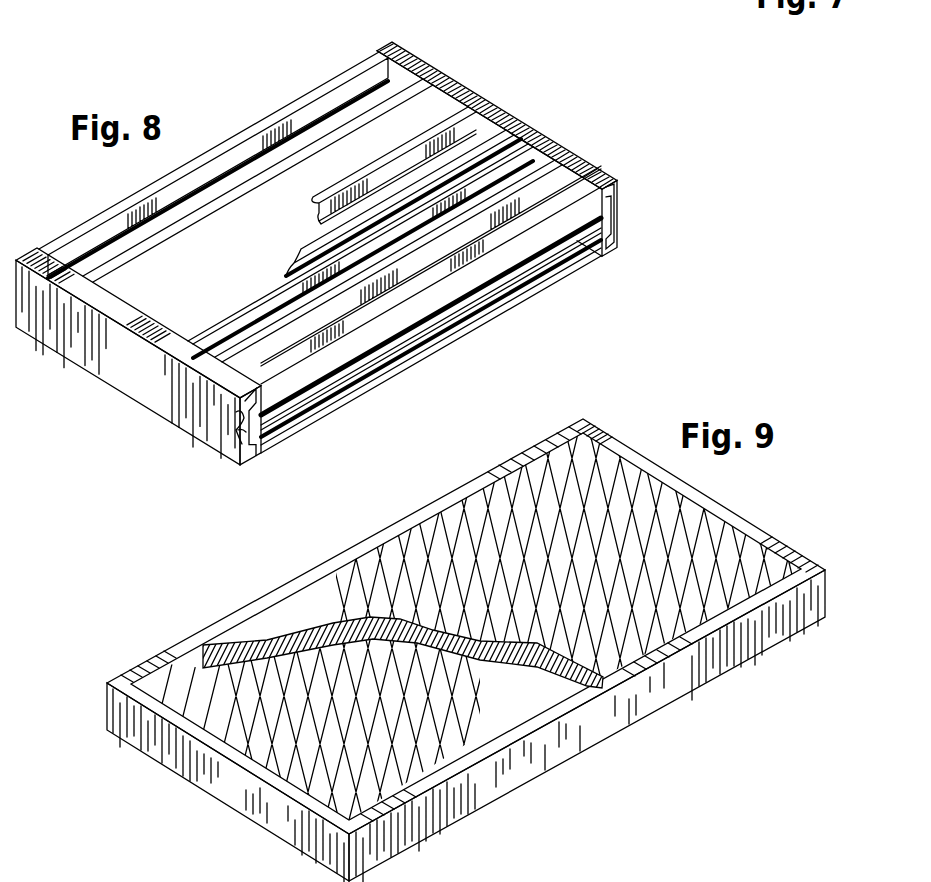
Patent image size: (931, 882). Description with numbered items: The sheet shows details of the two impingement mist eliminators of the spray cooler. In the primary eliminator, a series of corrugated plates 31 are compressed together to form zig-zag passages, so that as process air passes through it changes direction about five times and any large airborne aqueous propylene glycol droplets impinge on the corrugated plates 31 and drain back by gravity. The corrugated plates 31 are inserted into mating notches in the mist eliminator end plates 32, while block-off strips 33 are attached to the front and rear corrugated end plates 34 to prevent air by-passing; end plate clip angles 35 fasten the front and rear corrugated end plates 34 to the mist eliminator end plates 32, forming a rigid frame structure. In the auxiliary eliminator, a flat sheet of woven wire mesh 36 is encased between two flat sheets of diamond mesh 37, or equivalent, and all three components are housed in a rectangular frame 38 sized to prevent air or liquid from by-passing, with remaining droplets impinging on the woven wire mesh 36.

In FIG. 8, the corrugated plates 31 is at (540, 163).
In FIG. 8, the mist eliminator end plates 32 is at (110, 388).
In FIG. 8, the block-off strips 33 is at (257, 120).
In FIG. 8, the front and rear corrugated end plates 34 is at (382, 100).
In FIG. 8, the end plate clip angles 35 is at (240, 430).
In FIG. 9, the woven wire mesh 36 is at (342, 604).
In FIG. 9, the diamond mesh 37 is at (637, 593).
In FIG. 9, the rectangular frame 38 is at (227, 783).